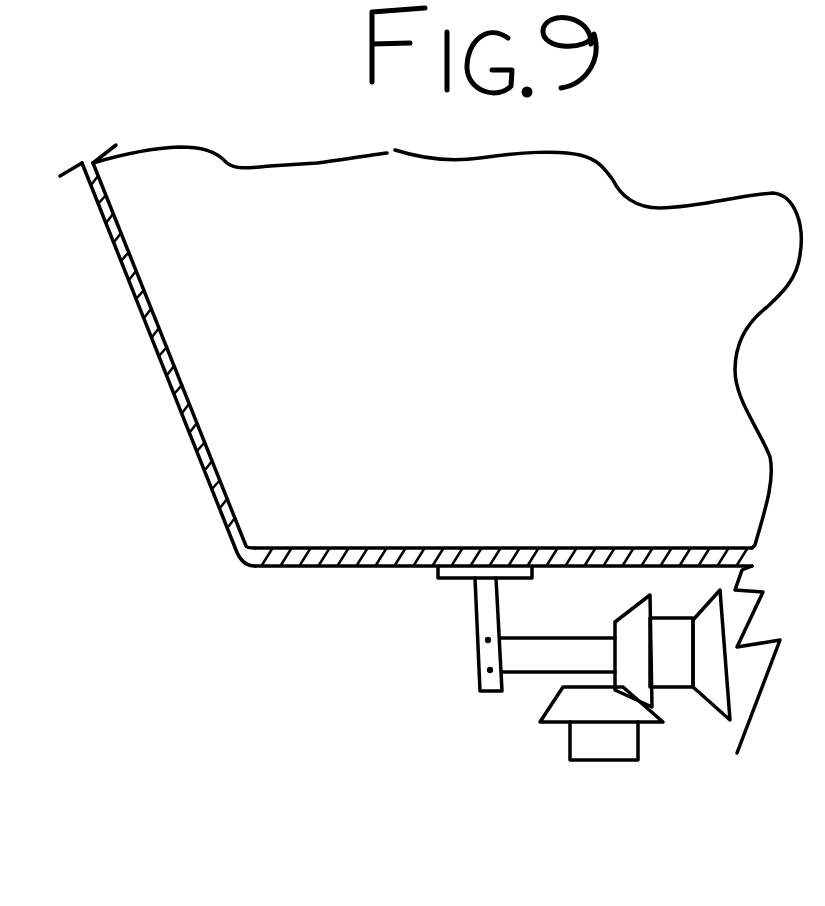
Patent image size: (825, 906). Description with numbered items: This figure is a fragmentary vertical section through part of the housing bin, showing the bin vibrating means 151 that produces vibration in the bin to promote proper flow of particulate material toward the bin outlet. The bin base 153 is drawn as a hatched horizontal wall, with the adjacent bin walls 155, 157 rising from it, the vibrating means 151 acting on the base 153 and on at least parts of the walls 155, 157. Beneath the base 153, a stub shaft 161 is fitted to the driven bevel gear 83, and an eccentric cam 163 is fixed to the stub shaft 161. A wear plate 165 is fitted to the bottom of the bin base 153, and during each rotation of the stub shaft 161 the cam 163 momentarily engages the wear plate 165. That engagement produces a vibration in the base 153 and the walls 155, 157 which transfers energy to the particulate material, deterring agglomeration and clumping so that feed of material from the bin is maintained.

The driven bevel gear 83 is at (643, 677).
The bin vibrating means 151 is at (439, 644).
The bin base 153 is at (420, 510).
The bin wall 155 is at (178, 365).
The bin wall 157 is at (430, 449).
The stub shaft 161 is at (540, 673).
The eccentric cam 163 is at (477, 613).
The wear plate 165 is at (518, 580).